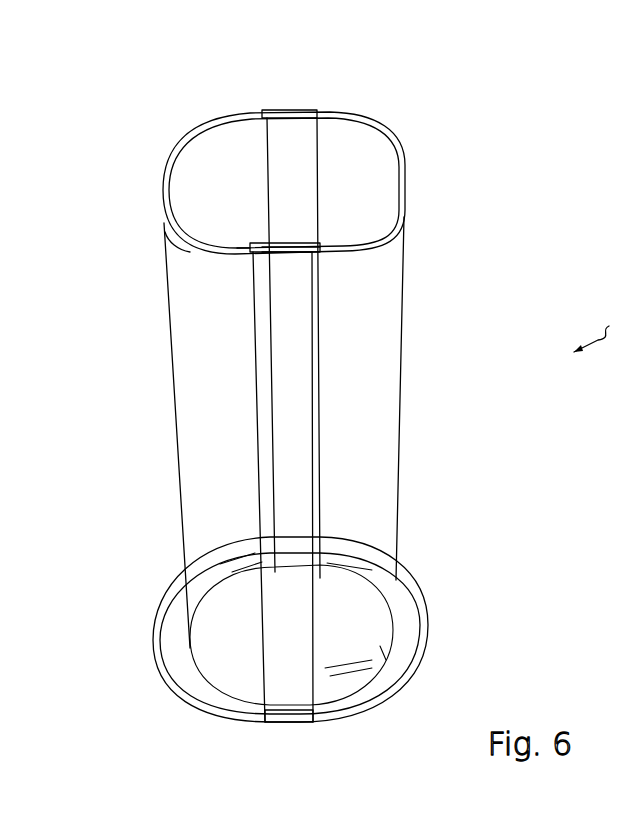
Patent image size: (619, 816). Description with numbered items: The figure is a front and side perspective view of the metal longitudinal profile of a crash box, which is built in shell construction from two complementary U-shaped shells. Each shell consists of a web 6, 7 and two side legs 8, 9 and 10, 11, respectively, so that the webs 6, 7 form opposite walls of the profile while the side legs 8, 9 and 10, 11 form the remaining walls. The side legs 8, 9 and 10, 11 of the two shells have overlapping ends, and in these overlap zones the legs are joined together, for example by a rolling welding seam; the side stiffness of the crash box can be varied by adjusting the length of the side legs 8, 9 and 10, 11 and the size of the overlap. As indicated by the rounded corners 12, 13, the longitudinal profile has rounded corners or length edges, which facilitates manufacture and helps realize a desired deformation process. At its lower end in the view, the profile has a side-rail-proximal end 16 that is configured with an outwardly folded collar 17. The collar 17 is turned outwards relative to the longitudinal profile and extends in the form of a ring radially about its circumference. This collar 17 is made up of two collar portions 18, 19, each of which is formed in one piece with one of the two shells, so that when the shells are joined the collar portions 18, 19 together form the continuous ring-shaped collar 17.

The web 6 is at (405, 188).
The web 7 is at (165, 184).
The side leg 8 is at (298, 113).
The side leg 9 is at (330, 250).
The side leg 10 is at (262, 113).
The side leg 11 is at (242, 255).
The rounded corner 12 is at (380, 127).
The rounded corner 13 is at (172, 250).
The side-rail-proximal end 16 is at (135, 612).
The collar 17 is at (432, 630).
The collar portion 18 is at (420, 668).
The collar portion 19 is at (162, 675).